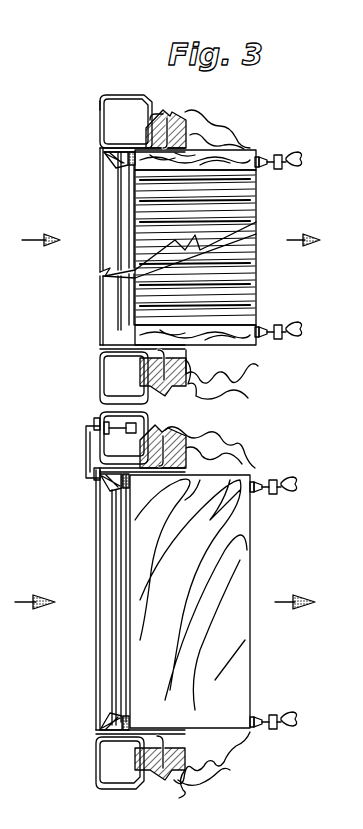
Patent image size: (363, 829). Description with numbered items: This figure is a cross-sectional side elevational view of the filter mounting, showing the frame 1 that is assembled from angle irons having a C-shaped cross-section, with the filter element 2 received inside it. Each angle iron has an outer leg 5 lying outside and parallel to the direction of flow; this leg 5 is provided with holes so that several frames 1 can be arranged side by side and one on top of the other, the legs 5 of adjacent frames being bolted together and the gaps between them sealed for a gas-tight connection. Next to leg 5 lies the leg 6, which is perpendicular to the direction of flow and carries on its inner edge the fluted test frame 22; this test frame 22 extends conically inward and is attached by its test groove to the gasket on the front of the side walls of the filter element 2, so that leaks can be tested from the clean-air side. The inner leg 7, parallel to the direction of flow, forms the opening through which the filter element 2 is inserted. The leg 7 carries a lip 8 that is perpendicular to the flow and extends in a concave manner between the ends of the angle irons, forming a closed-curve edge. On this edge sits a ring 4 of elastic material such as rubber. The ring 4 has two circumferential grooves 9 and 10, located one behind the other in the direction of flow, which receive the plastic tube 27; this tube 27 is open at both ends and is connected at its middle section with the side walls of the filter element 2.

The frame 1 is at (86, 92).
The filter element 2 is at (248, 278).
The ring 4 is at (160, 124).
The leg 5 is at (123, 96).
The leg 6 is at (100, 115).
The inner leg 7 is at (106, 164).
The lip 8 is at (185, 152).
The circumferential groove 9 is at (170, 770).
The circumferential groove 10 is at (118, 770).
The fluted test frame 22 is at (108, 488).
The plastic tube 27 is at (262, 380).